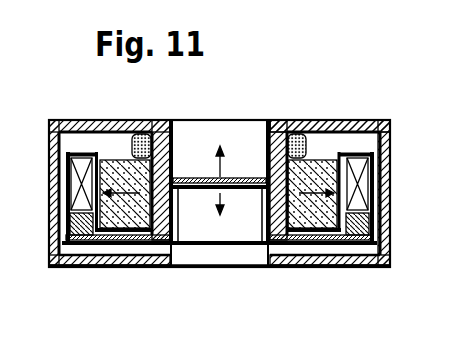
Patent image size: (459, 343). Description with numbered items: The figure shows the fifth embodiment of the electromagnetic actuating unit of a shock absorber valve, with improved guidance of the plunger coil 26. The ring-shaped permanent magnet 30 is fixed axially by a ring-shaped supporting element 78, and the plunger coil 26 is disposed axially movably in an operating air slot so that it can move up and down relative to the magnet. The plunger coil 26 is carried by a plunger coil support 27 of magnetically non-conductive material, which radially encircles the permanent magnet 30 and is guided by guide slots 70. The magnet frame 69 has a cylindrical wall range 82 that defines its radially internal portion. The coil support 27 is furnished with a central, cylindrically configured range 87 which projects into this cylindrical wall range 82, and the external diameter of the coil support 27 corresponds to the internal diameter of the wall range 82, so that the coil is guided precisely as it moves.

The plunger coil 26 is at (390, 158).
The plunger coil support 27 is at (357, 253).
The permanent magnet 30 is at (318, 165).
The magnet frame 69 is at (333, 128).
The guide slots 70 is at (172, 248).
The supporting element 78 is at (296, 147).
The cylindrical wall range 82 is at (180, 153).
The central cylindrically configured range 87 is at (238, 177).